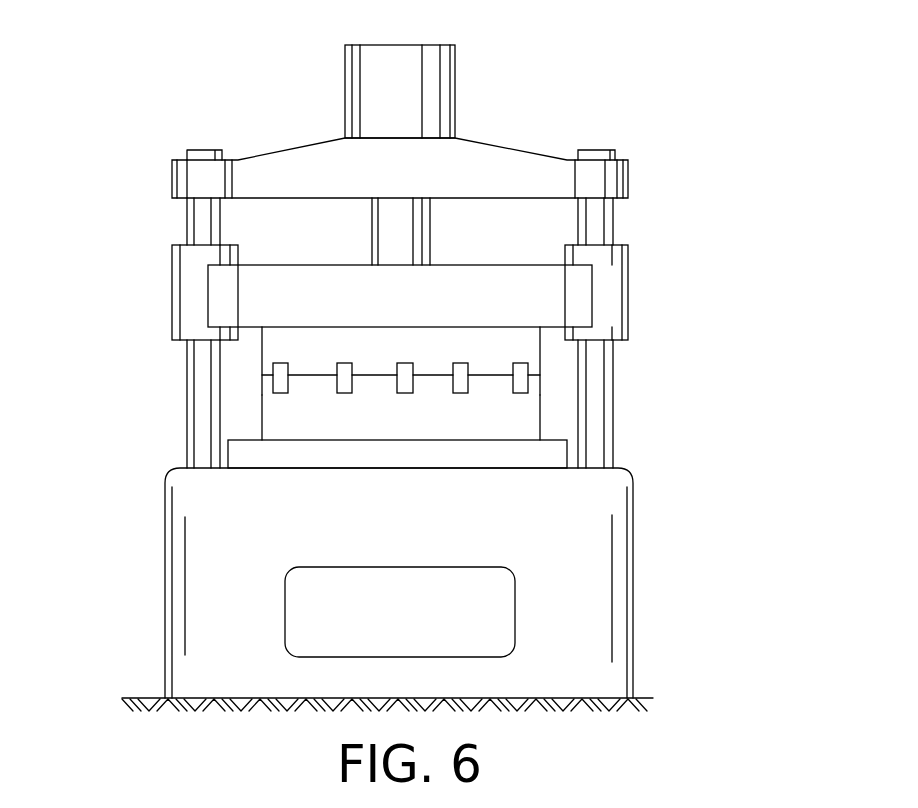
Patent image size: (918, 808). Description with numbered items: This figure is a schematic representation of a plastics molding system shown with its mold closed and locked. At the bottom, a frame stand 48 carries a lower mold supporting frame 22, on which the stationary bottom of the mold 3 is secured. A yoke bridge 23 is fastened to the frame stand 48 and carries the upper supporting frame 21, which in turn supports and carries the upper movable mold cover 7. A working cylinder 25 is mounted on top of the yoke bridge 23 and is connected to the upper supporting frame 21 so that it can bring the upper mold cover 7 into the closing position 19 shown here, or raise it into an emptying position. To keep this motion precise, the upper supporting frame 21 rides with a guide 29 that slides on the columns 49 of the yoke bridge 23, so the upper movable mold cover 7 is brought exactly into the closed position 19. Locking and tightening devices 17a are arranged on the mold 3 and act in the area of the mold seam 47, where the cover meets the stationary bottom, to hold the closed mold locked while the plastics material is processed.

The working cylinder 25 is at (446, 79).
The yoke bridge 23 is at (608, 178).
The columns 49 is at (200, 220).
The guide 29 is at (192, 297).
The upper supporting frame 21 is at (575, 298).
The upper movable mold cover 7 is at (527, 350).
The mold 3 is at (525, 413).
The closed position 19 is at (305, 388).
The locking and tightening devices 17a is at (273, 385).
The mold seam 47 is at (253, 372).
The lower mold supporting frame 22 is at (557, 453).
The frame stand 48 is at (593, 575).